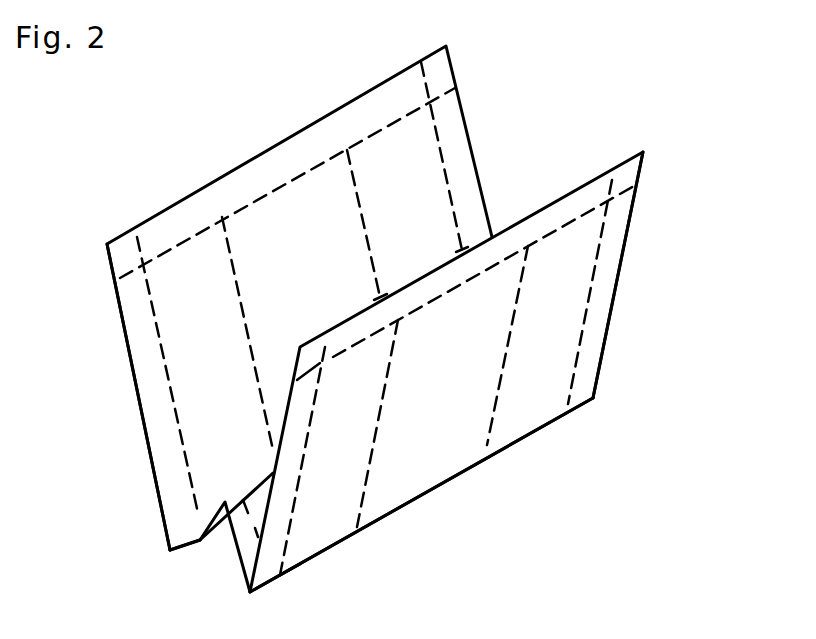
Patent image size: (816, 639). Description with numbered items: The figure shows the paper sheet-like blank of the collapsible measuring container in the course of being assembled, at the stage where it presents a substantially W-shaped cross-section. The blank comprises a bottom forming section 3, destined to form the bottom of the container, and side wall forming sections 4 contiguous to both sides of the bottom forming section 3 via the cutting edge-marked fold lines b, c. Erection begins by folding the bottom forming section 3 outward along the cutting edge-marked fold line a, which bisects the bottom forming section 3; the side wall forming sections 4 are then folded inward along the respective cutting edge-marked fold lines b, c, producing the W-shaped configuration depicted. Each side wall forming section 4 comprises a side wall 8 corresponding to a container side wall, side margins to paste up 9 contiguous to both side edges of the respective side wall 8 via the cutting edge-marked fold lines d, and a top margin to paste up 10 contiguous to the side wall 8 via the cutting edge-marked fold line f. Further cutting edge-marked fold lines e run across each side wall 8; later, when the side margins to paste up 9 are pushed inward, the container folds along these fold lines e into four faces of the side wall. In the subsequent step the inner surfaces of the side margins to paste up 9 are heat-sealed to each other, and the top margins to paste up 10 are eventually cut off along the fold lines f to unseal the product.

The bottom forming section 3 is at (210, 553).
The side wall forming section 4 is at (487, 143).
The side wall 8 is at (328, 247).
The side margin to paste up 9 is at (148, 380).
The top margin to paste up 10 is at (283, 153).
The cutting edge-marked fold line a is at (245, 485).
The cutting edge-marked fold line b is at (197, 542).
The cutting edge-marked fold line c is at (295, 567).
The cutting edge-marked fold line d is at (153, 325).
The cutting edge-marked fold line e is at (373, 473).
The cutting edge-marked fold line f is at (266, 194).